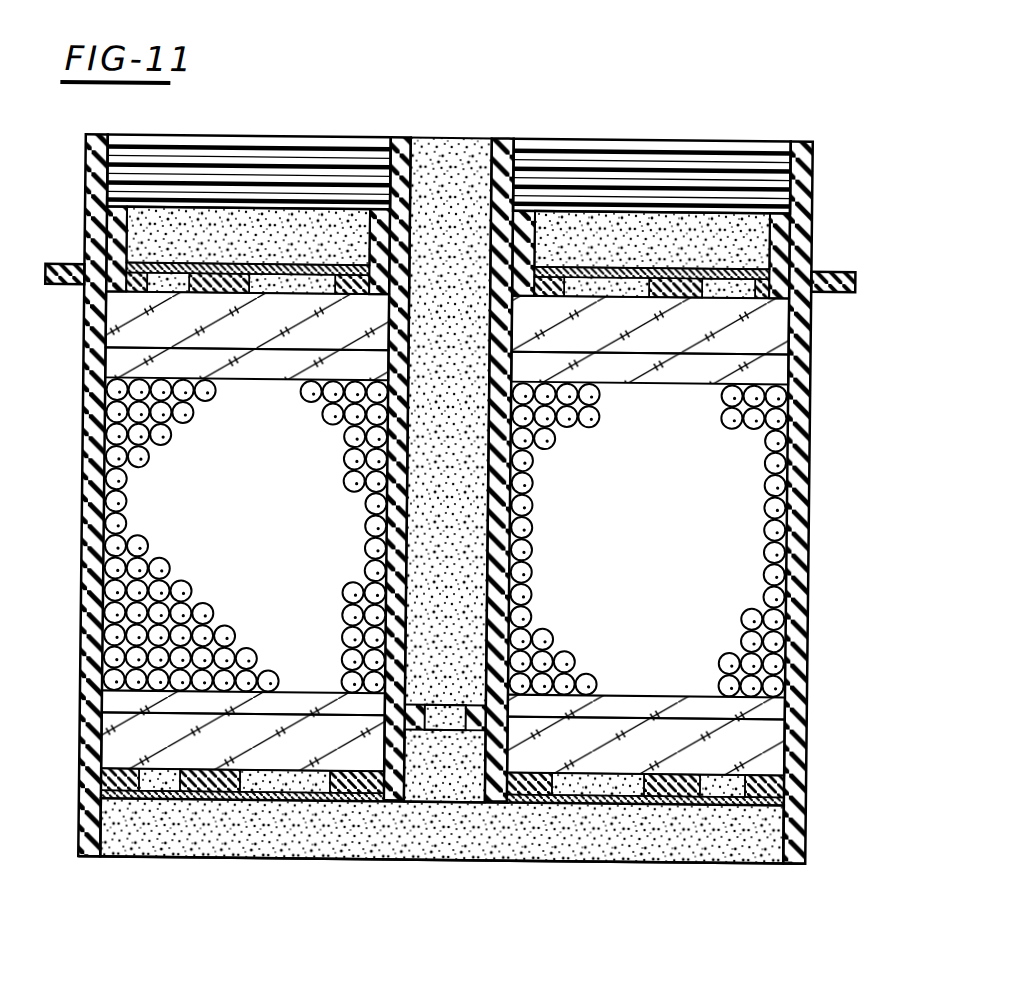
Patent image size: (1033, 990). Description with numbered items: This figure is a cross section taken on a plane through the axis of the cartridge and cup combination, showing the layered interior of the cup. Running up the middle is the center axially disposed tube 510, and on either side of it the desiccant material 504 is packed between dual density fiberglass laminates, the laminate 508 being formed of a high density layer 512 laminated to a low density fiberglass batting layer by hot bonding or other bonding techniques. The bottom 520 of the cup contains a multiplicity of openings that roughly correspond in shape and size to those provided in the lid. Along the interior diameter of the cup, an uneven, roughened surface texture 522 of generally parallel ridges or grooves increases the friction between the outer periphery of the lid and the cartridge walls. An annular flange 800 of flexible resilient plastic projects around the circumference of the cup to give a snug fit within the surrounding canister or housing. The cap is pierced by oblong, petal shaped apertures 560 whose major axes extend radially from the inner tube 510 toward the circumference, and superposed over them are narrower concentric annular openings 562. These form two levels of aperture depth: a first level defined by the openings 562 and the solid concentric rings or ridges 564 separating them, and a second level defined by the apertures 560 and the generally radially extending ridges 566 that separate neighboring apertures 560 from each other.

The desiccant material 504 is at (790, 487).
The dual density fiberglass laminate 508 is at (793, 736).
The center axially disposed tube 510 is at (465, 165).
The high density layer 512 is at (122, 362).
The bottom 520 is at (117, 800).
The roughened surface texture 522 is at (327, 147).
The petal shaped apertures 560 is at (160, 783).
The concentric annular openings 562 is at (688, 298).
The concentric rings or ridges 564 is at (717, 275).
The radially extending ridges 566 is at (185, 265).
The annular flange 800 is at (833, 273).